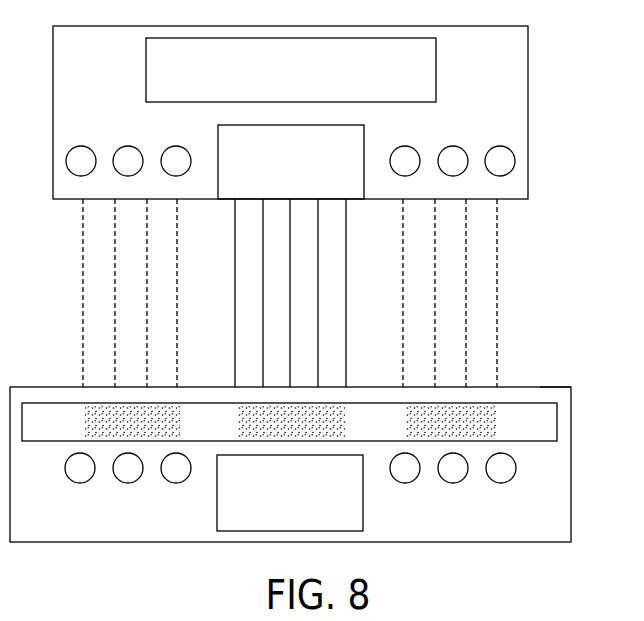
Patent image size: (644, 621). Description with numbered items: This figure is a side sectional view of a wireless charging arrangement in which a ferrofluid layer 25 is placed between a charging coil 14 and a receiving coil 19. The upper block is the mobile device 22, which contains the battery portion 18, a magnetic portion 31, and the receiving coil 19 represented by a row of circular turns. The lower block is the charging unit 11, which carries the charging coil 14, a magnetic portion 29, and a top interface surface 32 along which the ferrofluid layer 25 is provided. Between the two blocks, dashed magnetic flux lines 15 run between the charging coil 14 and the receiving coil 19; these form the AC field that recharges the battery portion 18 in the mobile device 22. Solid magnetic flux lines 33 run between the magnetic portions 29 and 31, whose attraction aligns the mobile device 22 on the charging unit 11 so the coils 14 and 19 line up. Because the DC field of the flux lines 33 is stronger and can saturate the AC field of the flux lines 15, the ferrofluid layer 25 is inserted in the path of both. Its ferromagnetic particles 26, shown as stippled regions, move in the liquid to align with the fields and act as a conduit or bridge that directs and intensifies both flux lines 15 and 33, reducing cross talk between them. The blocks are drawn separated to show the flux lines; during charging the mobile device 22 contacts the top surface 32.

The charging unit 11 is at (571, 478).
The charging coil 14 is at (176, 478).
The magnetic flux lines 15 is at (72, 294).
The battery portion 18 is at (281, 83).
The receiving coil 19 is at (176, 153).
The mobile device 22 is at (528, 118).
The ferrofluid layer 25 is at (551, 423).
The ferromagnetic particles 26 is at (86, 418).
The magnetic portion 29 is at (280, 504).
The magnetic portion 31 is at (281, 173).
The top interface surface 32 is at (562, 372).
The magnetic flux lines 33 is at (358, 292).